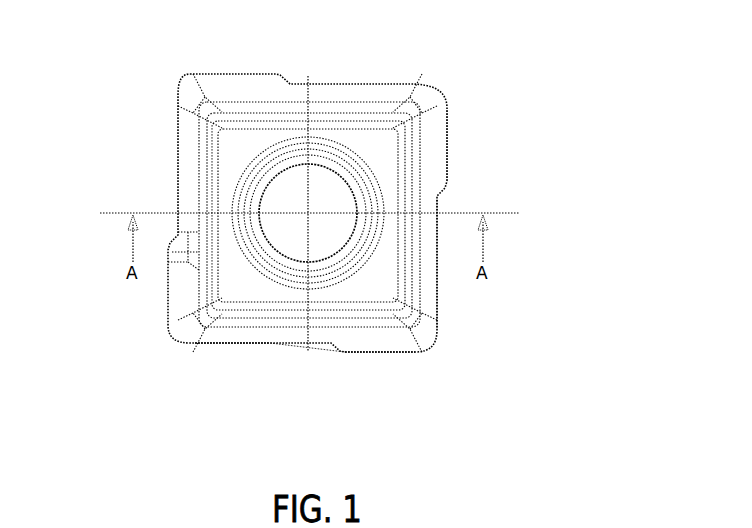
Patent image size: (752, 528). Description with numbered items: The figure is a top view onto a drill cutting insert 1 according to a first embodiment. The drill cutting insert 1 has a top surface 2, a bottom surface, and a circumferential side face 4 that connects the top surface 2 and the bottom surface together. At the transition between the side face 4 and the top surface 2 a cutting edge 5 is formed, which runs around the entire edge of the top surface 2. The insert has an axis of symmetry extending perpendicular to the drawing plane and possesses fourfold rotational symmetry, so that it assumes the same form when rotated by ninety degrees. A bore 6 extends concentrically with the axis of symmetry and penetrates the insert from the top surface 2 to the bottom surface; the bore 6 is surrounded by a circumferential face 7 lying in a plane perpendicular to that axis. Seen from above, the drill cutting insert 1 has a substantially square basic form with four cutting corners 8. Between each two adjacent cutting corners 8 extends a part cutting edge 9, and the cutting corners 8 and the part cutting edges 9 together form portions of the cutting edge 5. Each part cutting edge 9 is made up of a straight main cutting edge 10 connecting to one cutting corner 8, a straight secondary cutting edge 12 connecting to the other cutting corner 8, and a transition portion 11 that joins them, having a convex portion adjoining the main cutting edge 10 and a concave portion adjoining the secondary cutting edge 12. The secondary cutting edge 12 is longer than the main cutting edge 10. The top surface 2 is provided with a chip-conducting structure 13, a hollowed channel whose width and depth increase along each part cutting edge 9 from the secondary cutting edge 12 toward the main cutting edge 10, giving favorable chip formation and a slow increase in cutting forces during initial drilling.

The drill cutting insert 1 is at (108, 116).
The top surface 2 is at (366, 140).
The circumferential side face 4 is at (447, 153).
The cutting edge 5 is at (437, 308).
The bore 6 is at (297, 178).
The circumferential face 7 is at (232, 163).
The cutting corners 8 is at (191, 74).
The part cutting edges 9 is at (305, 405).
The main cutting edge 10 is at (383, 354).
The transition portion 11 is at (330, 350).
The secondary cutting edge 12 is at (258, 346).
The chip-conducting structure 13 is at (203, 271).